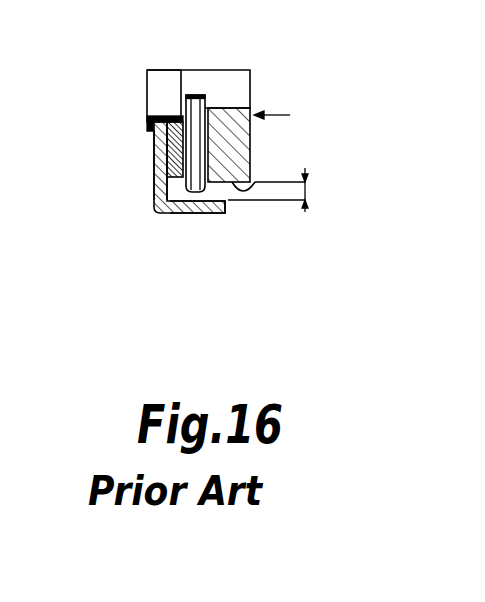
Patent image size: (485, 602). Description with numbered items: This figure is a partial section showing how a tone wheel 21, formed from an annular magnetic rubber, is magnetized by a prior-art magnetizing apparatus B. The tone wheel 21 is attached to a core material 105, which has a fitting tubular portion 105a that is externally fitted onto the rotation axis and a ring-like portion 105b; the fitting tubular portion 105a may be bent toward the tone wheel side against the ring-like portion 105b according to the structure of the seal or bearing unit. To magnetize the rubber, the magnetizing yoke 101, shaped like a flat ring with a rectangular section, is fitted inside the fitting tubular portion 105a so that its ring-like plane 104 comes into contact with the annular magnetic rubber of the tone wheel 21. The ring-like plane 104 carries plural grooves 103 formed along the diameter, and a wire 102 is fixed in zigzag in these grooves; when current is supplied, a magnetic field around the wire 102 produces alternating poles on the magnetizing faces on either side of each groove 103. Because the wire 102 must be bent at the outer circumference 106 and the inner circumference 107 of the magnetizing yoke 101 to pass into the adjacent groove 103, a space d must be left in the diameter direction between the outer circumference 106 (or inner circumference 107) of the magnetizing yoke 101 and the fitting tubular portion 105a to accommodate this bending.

The magnetizing yoke 101 is at (244, 86).
The wire 102 is at (204, 97).
The groove 103 is at (181, 107).
The ring-like plane 104 is at (175, 97).
The core material 105 is at (150, 207).
The fitting tubular portion 105a is at (202, 213).
The ring-like portion 105b is at (157, 149).
The outer circumference 106 is at (255, 182).
The inner circumference 107 is at (227, 108).
The tone wheel 21 is at (162, 174).
The magnetizing apparatus for tone wheel B is at (284, 113).
The space d is at (279, 190).